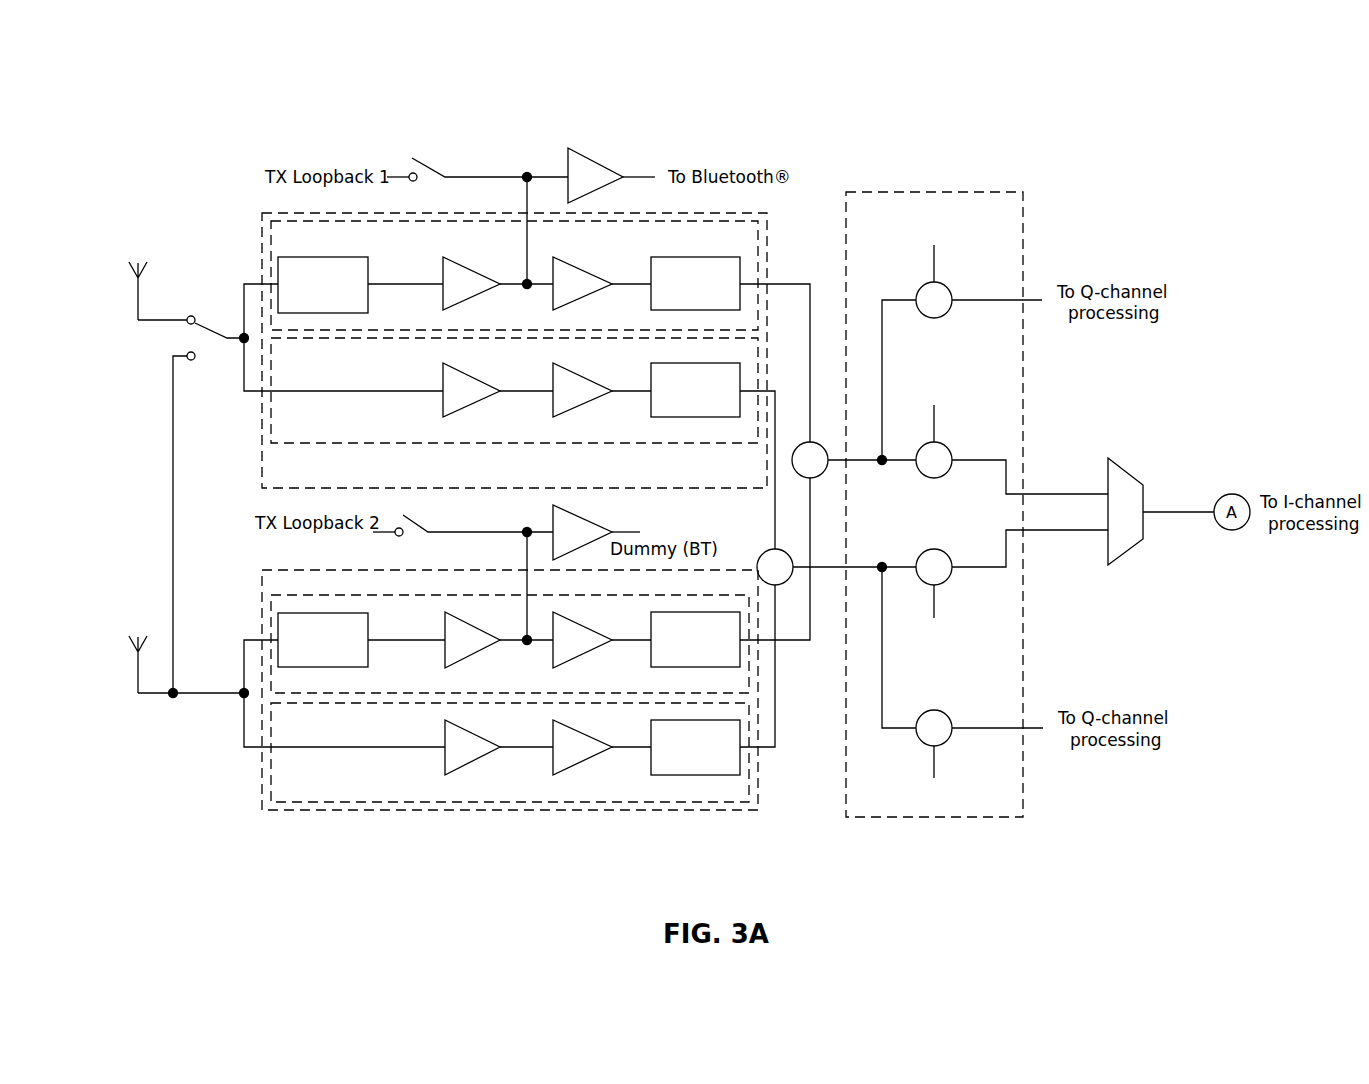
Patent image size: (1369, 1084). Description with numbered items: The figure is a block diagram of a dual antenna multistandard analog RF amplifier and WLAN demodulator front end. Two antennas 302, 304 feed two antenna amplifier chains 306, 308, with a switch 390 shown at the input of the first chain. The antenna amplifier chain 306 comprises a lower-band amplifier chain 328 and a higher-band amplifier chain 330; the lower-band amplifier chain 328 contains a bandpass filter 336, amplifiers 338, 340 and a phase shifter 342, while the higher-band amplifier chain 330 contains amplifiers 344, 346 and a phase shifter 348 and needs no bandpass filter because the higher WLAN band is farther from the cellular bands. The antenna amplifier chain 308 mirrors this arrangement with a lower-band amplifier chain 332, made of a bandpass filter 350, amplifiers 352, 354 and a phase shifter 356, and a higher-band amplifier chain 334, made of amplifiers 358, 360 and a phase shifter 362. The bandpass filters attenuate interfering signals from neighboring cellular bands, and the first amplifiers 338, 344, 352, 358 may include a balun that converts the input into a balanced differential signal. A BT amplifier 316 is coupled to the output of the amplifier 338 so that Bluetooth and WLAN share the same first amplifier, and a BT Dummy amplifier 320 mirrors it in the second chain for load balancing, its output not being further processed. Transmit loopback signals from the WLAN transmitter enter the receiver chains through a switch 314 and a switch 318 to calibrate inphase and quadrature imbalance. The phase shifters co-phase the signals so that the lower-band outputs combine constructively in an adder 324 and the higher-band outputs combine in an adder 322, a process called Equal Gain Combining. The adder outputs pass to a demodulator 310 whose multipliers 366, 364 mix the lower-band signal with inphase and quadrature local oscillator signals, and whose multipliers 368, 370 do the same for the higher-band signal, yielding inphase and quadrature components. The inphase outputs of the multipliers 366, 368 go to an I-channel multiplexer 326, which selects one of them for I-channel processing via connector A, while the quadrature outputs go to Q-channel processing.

The antenna 302 is at (138, 293).
The antenna 304 is at (137, 648).
The antenna amplifier chain 306 is at (327, 488).
The antenna amplifier chain 308 is at (278, 570).
The demodulator 310 is at (882, 192).
The switch 314 is at (433, 171).
The BT amplifier 316 is at (609, 161).
The switch 318 is at (420, 528).
The BT Dummy amplifier 320 is at (580, 518).
The adder 322 is at (763, 555).
The adder 324 is at (816, 445).
The I-channel multiplexer 326 is at (1125, 553).
The 2.4 GHz amplifier chain 328 is at (367, 330).
The 5 GHz amplifier chain 330 is at (293, 443).
The 2.4 GHz amplifier chain 332 is at (305, 595).
The 5 GHz amplifier chain 334 is at (278, 802).
The bandpass filter 336 is at (297, 257).
The amplifier 338 is at (447, 263).
The amplifier 340 is at (568, 266).
The phase shifter 342 is at (665, 257).
The amplifier 344 is at (470, 377).
The amplifier 346 is at (575, 372).
The phase shifter 348 is at (660, 363).
The bandpass filter 350 is at (297, 667).
The amplifier 352 is at (453, 663).
The amplifier 354 is at (561, 663).
The phase shifter 356 is at (660, 667).
The amplifier 358 is at (465, 770).
The amplifier 360 is at (572, 772).
The phase shifter 362 is at (662, 775).
The multiplier 364 is at (947, 288).
The multiplier 366 is at (948, 448).
The multiplier 368 is at (948, 580).
The multiplier 370 is at (947, 712).
The switch 390 is at (206, 327).